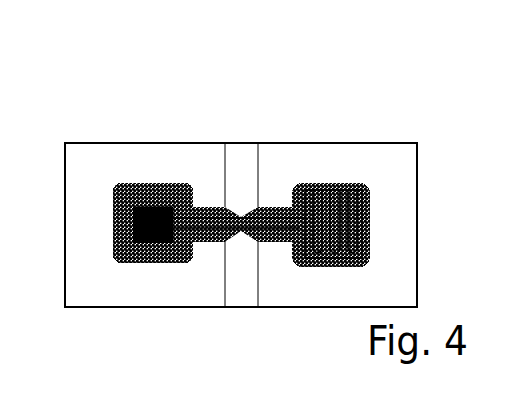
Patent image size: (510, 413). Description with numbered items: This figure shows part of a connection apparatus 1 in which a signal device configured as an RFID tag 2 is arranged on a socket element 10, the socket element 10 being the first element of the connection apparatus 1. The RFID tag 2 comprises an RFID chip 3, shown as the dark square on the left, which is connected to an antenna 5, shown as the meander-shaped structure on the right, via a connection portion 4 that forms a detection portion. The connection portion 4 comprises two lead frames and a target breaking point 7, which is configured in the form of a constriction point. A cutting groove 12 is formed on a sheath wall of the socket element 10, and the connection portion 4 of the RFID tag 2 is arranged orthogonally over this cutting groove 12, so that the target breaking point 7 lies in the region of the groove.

The connection apparatus 1 is at (337, 169).
The RFID tag 2 is at (275, 162).
The RFID chip 3 is at (128, 257).
The connection portion 4 is at (280, 238).
The antenna 5 is at (367, 220).
The target breaking point 7 is at (242, 202).
The socket element 10 is at (110, 160).
The cutting groove 12 is at (240, 293).